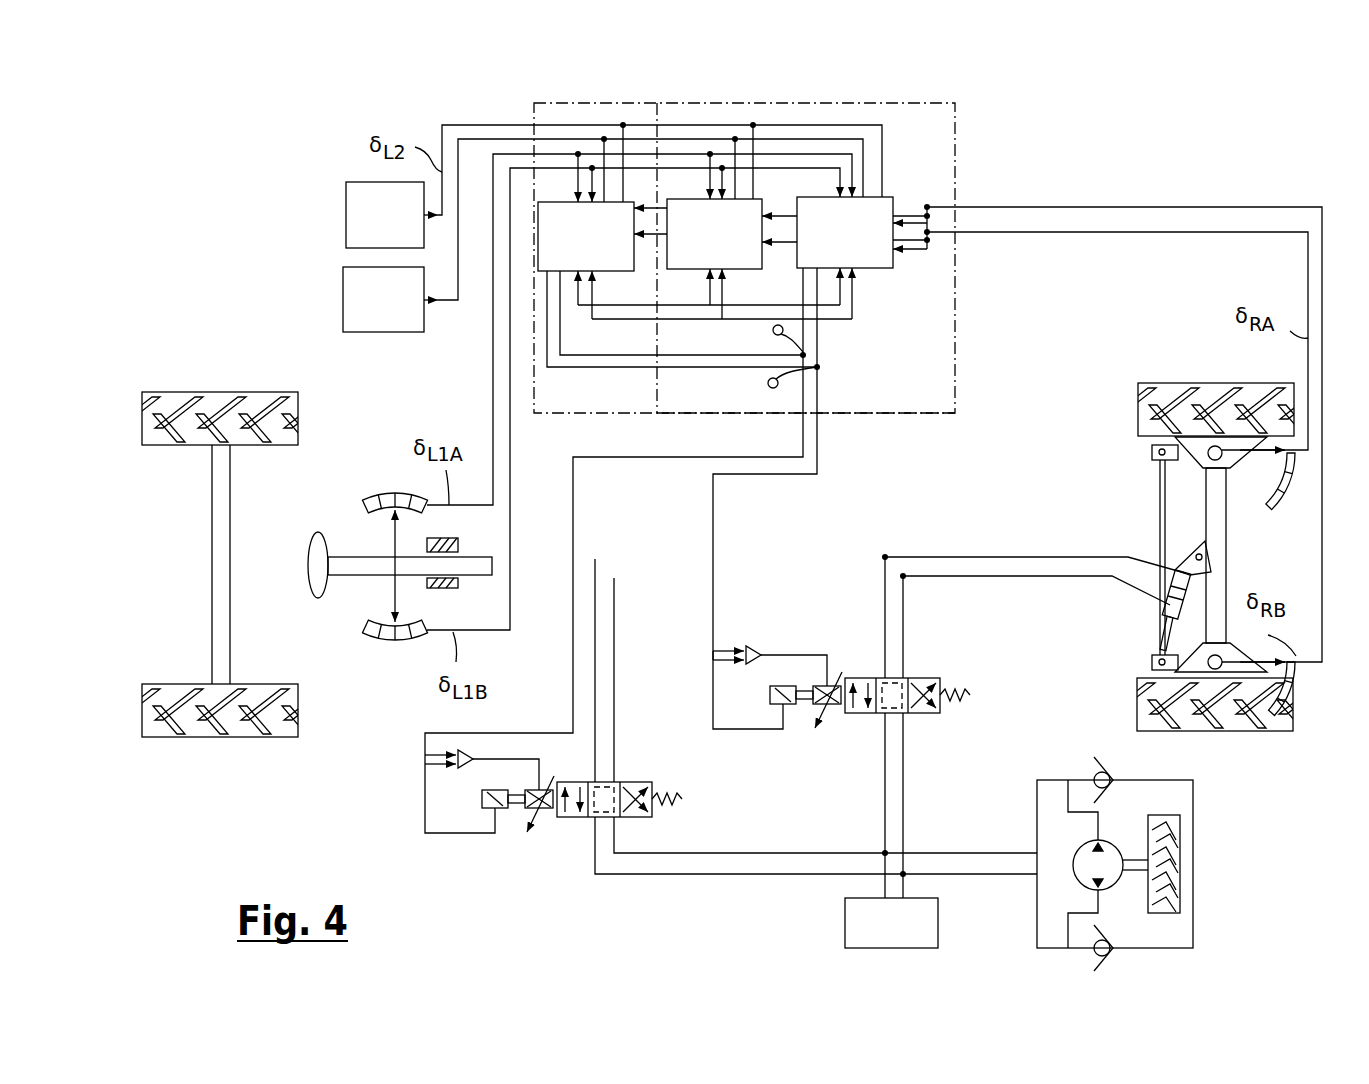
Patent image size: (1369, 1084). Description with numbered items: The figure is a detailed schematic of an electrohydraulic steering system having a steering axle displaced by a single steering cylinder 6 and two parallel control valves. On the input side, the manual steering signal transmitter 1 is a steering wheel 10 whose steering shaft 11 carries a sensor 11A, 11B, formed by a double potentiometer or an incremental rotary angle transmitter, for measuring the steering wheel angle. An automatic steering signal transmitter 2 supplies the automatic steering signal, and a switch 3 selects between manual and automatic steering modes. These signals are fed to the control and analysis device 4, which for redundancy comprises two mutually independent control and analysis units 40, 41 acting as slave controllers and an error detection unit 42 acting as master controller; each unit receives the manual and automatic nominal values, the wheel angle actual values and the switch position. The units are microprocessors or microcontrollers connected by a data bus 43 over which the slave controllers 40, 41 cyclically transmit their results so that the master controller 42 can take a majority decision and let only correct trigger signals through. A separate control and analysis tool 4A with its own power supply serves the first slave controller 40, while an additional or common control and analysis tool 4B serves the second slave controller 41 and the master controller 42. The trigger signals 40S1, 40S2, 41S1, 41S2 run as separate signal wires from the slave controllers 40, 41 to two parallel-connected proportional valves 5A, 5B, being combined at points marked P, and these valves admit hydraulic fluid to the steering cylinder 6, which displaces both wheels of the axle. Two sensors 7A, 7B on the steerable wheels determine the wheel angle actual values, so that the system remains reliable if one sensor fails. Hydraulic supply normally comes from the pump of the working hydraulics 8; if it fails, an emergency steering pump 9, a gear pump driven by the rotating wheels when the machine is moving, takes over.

The manual steering signal transmitter 1 is at (410, 552).
The automatic steering signal transmitter 2 is at (614, 186).
The switch 3 is at (603, 235).
The control and analysis device 4 is at (958, 145).
The control and analysis tool 4A is at (548, 117).
The control and analysis tool 4B is at (955, 312).
The proportional valve 5A is at (866, 716).
The proportional valve 5B is at (573, 821).
The steering cylinder 6 is at (1184, 566).
The sensor 7A is at (1283, 511).
The sensor 7B is at (1292, 669).
The working hydraulics 8 is at (891, 923).
The emergency steering pump 9 is at (1115, 864).
The steering wheel 10 is at (315, 596).
The steering shaft 11 is at (470, 580).
The sensor 11A is at (379, 496).
The sensor 11B is at (382, 643).
The control and analysis unit 40 is at (586, 236).
The control and analysis unit 41 is at (845, 232).
The error detection unit 42 is at (714, 234).
The data bus 43 is at (750, 312).
The trigger signal 40S1 is at (553, 372).
The trigger signal 40S2 is at (565, 337).
The trigger signal 41S1 is at (810, 338).
The trigger signal 41S2 is at (805, 398).